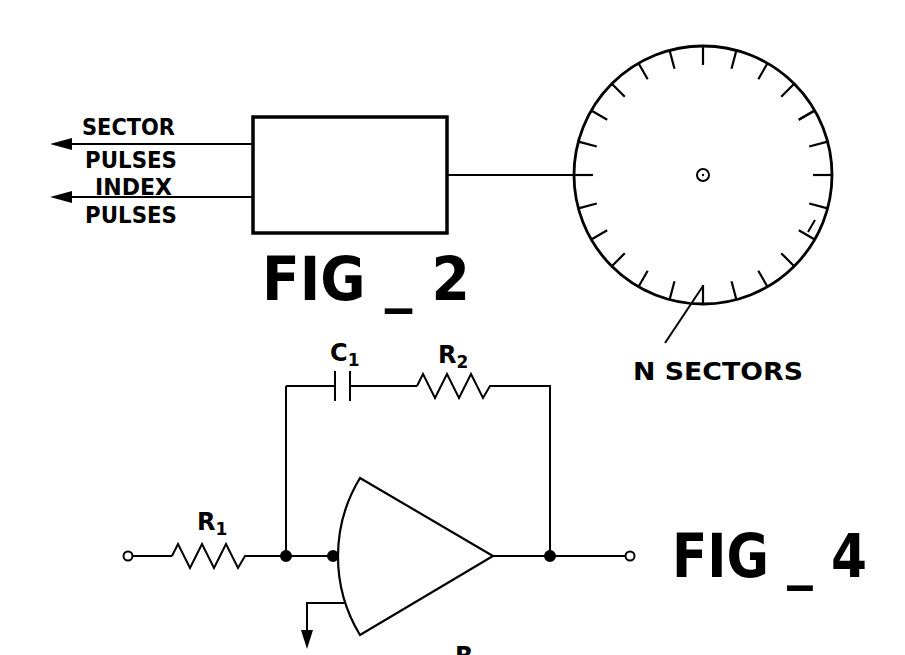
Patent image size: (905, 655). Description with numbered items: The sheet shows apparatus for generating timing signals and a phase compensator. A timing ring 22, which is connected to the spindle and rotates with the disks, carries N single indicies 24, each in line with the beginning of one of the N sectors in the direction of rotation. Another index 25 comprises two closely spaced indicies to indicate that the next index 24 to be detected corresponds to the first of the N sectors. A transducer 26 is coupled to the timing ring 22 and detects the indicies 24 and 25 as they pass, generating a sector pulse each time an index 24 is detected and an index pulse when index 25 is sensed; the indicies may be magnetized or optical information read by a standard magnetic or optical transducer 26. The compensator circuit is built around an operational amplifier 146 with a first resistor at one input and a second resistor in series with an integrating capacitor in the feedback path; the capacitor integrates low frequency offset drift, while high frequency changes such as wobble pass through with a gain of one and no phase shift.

In FIG. 2, the timing ring 22 is at (748, 53).
In FIG. 2, the single index 24 is at (796, 122).
In FIG. 2, the index 25 is at (818, 227).
In FIG. 2, the transducer 26 is at (357, 117).
In FIG. 4, the operational amplifier 146 is at (415, 510).